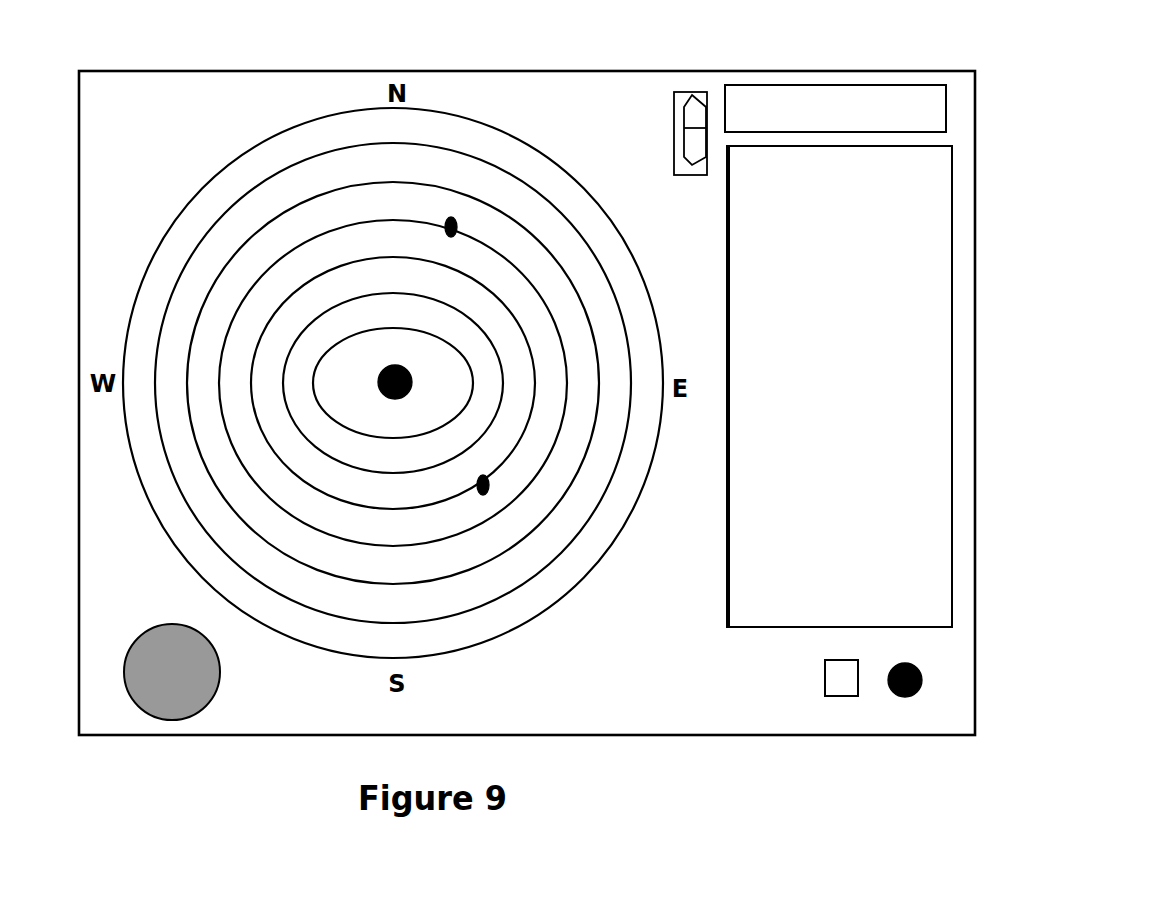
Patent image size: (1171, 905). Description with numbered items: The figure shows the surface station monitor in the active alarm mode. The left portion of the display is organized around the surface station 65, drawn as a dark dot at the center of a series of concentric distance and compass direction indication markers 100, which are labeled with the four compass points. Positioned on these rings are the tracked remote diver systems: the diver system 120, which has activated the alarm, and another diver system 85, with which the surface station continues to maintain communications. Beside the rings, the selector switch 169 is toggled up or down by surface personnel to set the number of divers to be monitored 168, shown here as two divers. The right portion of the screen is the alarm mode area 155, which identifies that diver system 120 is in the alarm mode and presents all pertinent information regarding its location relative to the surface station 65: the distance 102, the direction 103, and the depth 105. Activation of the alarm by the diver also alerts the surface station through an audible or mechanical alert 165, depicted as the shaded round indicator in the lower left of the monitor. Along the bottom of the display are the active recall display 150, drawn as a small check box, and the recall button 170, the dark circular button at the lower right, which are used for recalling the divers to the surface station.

The concentric distance and compass direction indication markers 100 is at (530, 145).
The surface station 65 is at (410, 372).
The remote diver system 120 is at (445, 233).
The remote diver system 85 is at (476, 490).
The selector switch 169 is at (692, 95).
The number of divers to be monitored 168 is at (947, 97).
The alarm mode area 155 is at (953, 223).
The distance 102 is at (937, 273).
The direction 103 is at (917, 347).
The depth 105 is at (937, 423).
The active recall display 150 is at (828, 694).
The recall button 170 is at (922, 678).
The audible or mechanical alert 165 is at (137, 708).